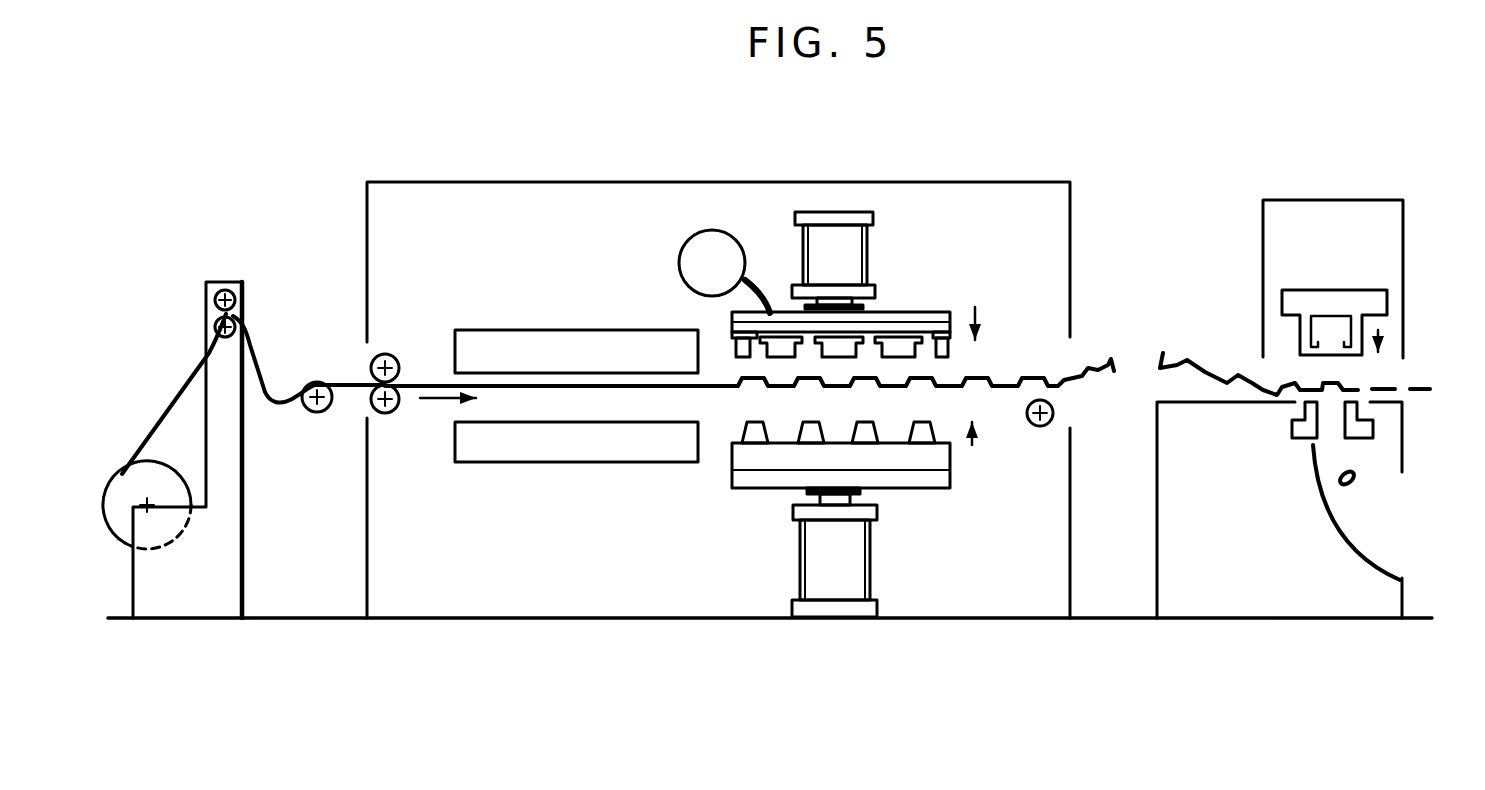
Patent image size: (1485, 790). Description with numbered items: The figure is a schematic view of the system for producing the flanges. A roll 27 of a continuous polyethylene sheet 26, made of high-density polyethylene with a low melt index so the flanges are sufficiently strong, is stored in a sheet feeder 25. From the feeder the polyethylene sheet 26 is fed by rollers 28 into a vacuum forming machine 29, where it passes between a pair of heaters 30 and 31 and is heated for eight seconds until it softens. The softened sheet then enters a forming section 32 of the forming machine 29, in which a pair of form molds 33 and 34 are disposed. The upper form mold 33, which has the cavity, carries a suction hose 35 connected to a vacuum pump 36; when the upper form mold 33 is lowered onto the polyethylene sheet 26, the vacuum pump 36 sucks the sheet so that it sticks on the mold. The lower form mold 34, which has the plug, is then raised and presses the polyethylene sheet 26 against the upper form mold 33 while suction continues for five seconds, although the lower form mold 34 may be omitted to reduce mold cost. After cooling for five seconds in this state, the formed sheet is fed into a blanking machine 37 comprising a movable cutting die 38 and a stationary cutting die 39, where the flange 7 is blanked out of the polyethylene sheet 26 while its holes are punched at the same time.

The flange 7 is at (1355, 485).
The sheet feeder 25 is at (187, 620).
The polyethylene sheet 26 is at (251, 323).
The roll 27 is at (125, 481).
The rollers 28 is at (225, 290).
The vacuum forming machine 29 is at (687, 622).
The heater 30 is at (560, 341).
The heater 31 is at (563, 452).
The forming section 32 is at (917, 227).
The upper form mold 33 is at (933, 317).
The lower form mold 34 is at (938, 458).
The suction hose 35 is at (764, 277).
The vacuum pump 36 is at (712, 232).
The blanking machine 37 is at (1278, 622).
The movable cutting die 38 is at (1338, 300).
The stationary cutting die 39 is at (1292, 425).